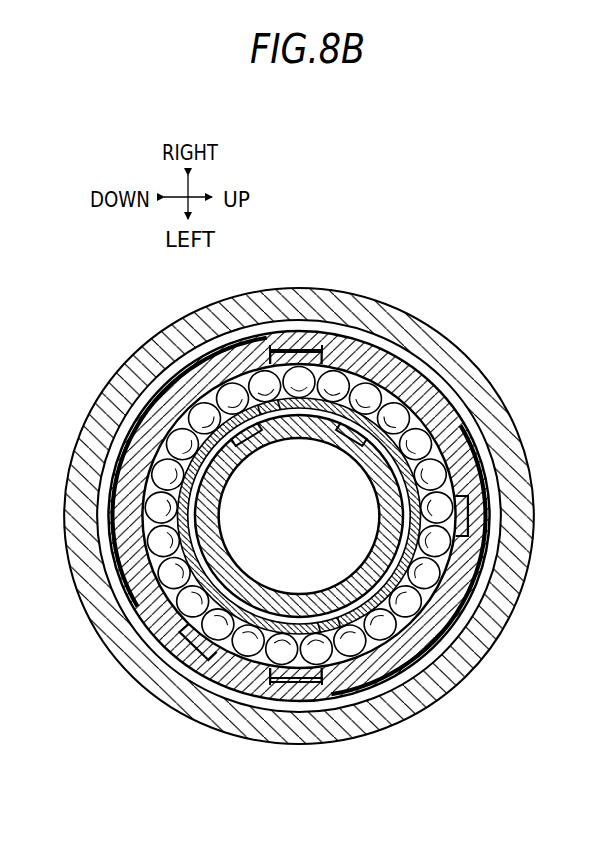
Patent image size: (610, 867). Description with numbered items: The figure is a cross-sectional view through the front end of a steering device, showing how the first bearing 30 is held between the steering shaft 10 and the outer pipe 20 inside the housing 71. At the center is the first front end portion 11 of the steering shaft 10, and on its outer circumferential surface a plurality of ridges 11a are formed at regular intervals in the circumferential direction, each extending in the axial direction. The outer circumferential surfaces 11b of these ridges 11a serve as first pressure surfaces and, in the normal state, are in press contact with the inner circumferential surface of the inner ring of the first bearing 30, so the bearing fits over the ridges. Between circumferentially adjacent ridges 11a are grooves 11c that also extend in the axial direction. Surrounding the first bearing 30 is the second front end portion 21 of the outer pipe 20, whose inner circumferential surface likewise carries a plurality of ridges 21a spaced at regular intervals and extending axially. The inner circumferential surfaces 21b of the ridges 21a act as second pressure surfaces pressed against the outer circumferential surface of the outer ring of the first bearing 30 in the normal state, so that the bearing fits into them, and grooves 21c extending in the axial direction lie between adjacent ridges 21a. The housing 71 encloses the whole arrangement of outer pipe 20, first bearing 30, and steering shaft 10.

The housing 71 is at (294, 290).
The second front end portion 21 is at (342, 513).
The outer pipe 20 is at (342, 513).
The ridge 21a is at (305, 342).
The inner circumferential surface 21b is at (195, 385).
The groove 21c is at (512, 492).
The first bearing 30 is at (418, 436).
The first front end portion 11 is at (298, 516).
The steering shaft 10 is at (298, 516).
The ridge 11a is at (327, 447).
The outer circumferential surface 11b is at (262, 432).
The groove 11c is at (385, 485).